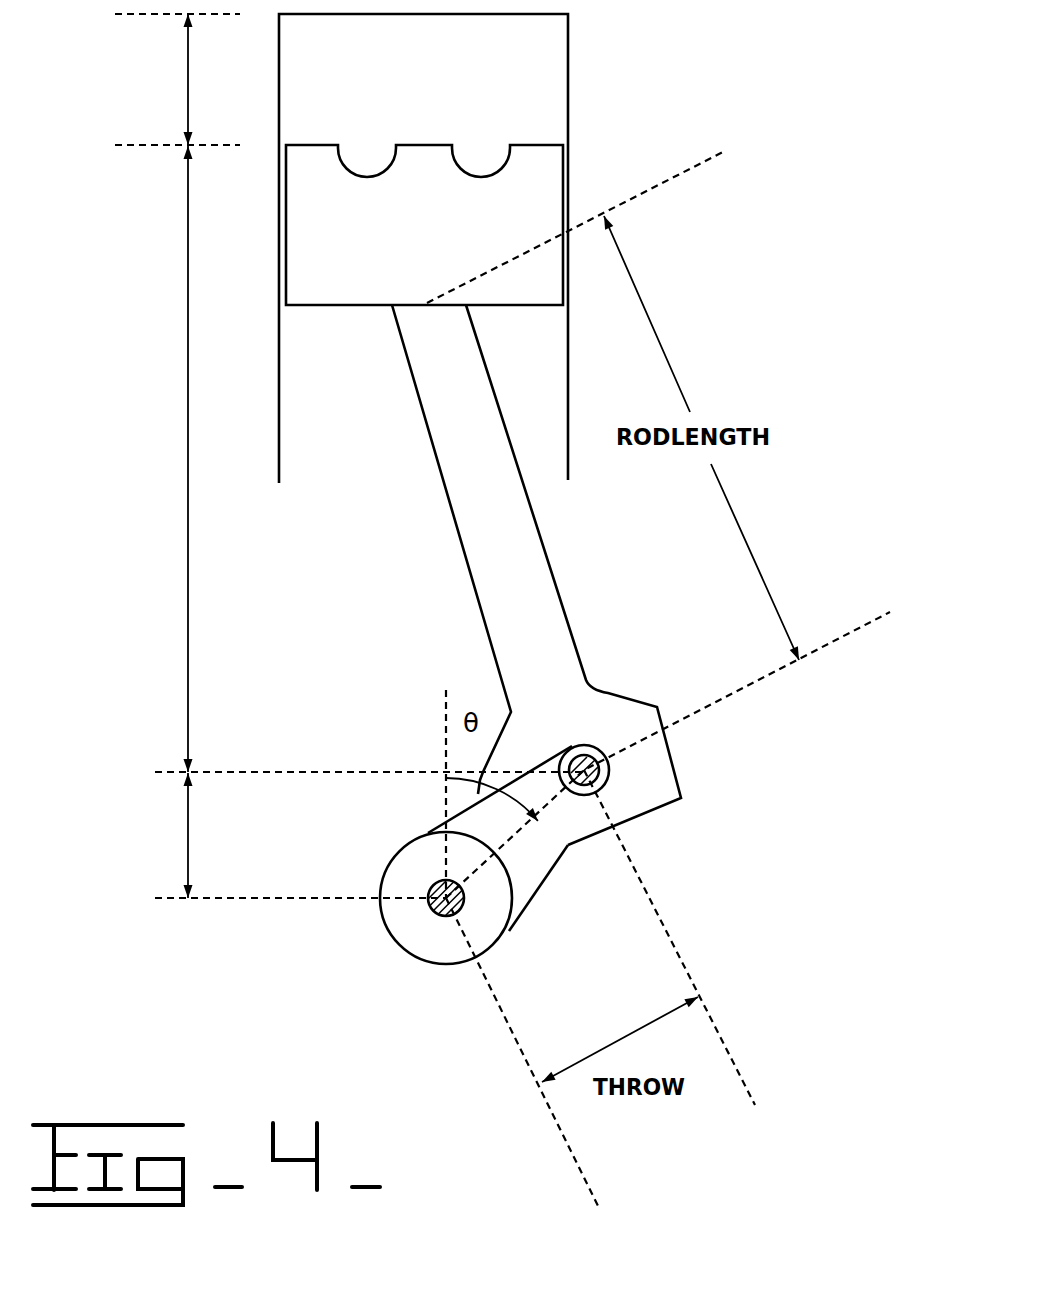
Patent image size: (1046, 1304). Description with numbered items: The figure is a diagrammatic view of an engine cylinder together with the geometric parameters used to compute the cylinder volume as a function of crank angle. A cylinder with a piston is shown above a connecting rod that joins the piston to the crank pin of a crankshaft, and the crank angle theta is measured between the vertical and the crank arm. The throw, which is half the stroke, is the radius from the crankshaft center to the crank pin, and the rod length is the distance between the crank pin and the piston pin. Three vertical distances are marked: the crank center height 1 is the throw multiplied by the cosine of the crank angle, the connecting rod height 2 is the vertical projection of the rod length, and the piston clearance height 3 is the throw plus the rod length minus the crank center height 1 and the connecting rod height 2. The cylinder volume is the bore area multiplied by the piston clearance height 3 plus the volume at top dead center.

The crank center height h1 1 is at (357, 835).
The connecting rod height h2 2 is at (186, 459).
The piston clearance height h3 3 is at (177, 79).